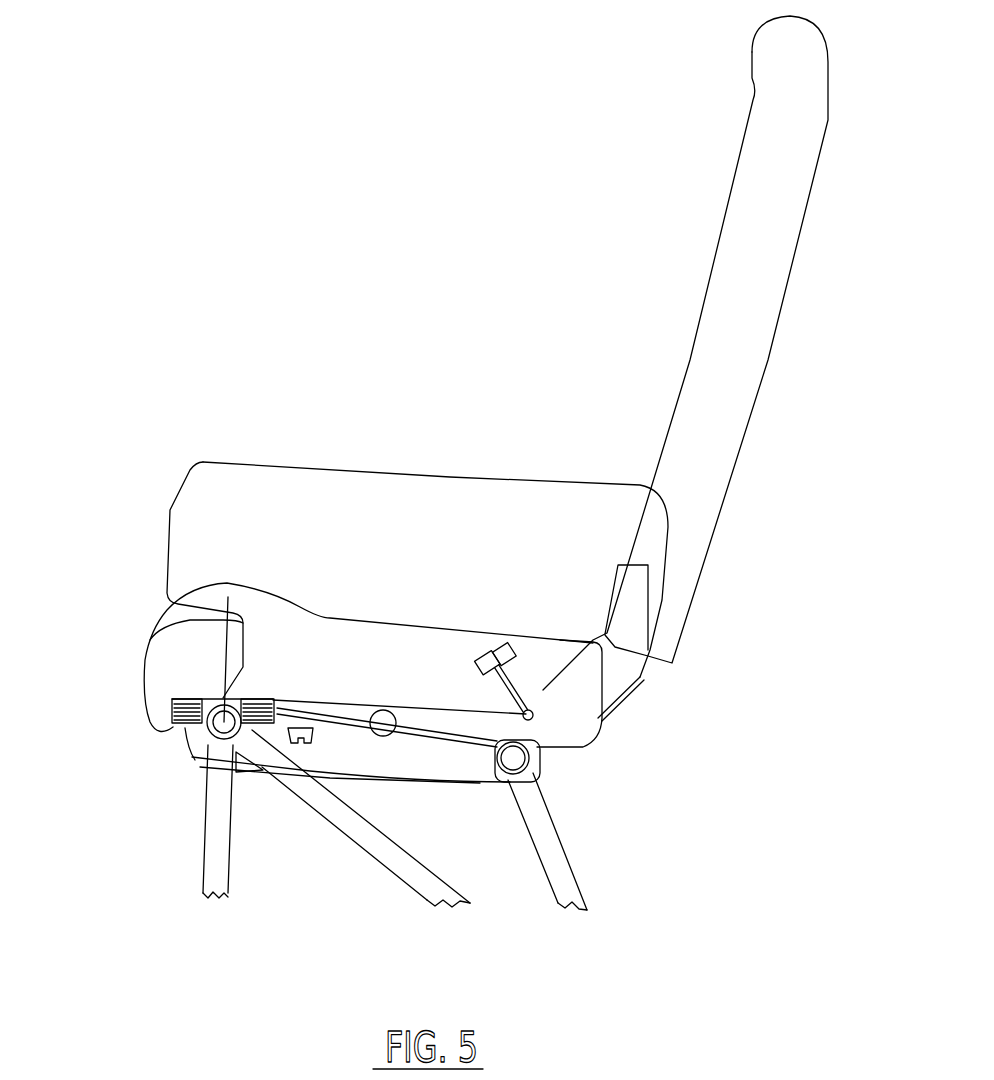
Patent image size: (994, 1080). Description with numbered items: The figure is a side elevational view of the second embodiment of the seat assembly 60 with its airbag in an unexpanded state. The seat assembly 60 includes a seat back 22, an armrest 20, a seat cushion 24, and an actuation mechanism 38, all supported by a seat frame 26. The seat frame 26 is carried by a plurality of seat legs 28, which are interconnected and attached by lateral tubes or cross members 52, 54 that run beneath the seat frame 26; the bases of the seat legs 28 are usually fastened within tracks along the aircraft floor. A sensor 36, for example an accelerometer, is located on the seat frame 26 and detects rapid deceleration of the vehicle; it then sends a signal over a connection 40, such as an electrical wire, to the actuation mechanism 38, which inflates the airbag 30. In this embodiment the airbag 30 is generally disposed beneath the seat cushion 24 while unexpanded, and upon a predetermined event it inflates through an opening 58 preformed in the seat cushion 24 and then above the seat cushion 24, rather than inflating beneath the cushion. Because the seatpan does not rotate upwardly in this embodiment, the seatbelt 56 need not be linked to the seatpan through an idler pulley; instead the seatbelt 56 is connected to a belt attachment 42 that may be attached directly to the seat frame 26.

The armrest 20 is at (425, 505).
The seat back 22 is at (731, 219).
The seat cushion 24 is at (152, 668).
The seat frame 26 is at (433, 772).
The seat legs 28 is at (565, 875).
The airbag 30 is at (198, 730).
The sensor 36 is at (308, 745).
The actuation mechanism 38 is at (228, 704).
The connection 40 is at (264, 776).
The belt attachment 42 is at (513, 690).
The cross member 52 is at (204, 740).
The cross member 54 is at (556, 757).
The seatbelt 56 is at (485, 640).
The opening 58 is at (147, 640).
The seat assembly 60 is at (447, 281).